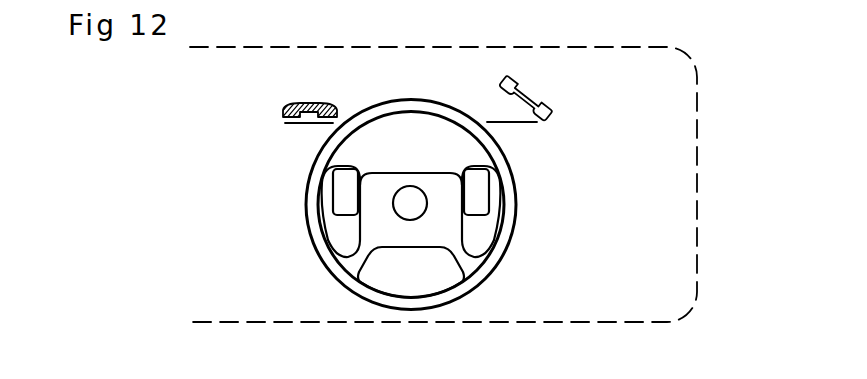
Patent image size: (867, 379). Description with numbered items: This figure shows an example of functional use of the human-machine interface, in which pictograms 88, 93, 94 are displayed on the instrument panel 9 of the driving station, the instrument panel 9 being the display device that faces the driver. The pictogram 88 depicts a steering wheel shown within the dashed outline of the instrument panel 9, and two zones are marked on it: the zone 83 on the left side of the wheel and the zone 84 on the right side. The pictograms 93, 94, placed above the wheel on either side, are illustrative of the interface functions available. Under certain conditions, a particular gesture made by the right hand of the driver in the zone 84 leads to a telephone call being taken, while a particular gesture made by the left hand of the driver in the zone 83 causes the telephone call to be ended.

The instrument panel 9 is at (697, 90).
The pictogram 88 is at (528, 221).
The zone 83 is at (337, 178).
The zone 84 is at (483, 174).
The pictogram 93 is at (308, 102).
The pictogram 94 is at (535, 93).